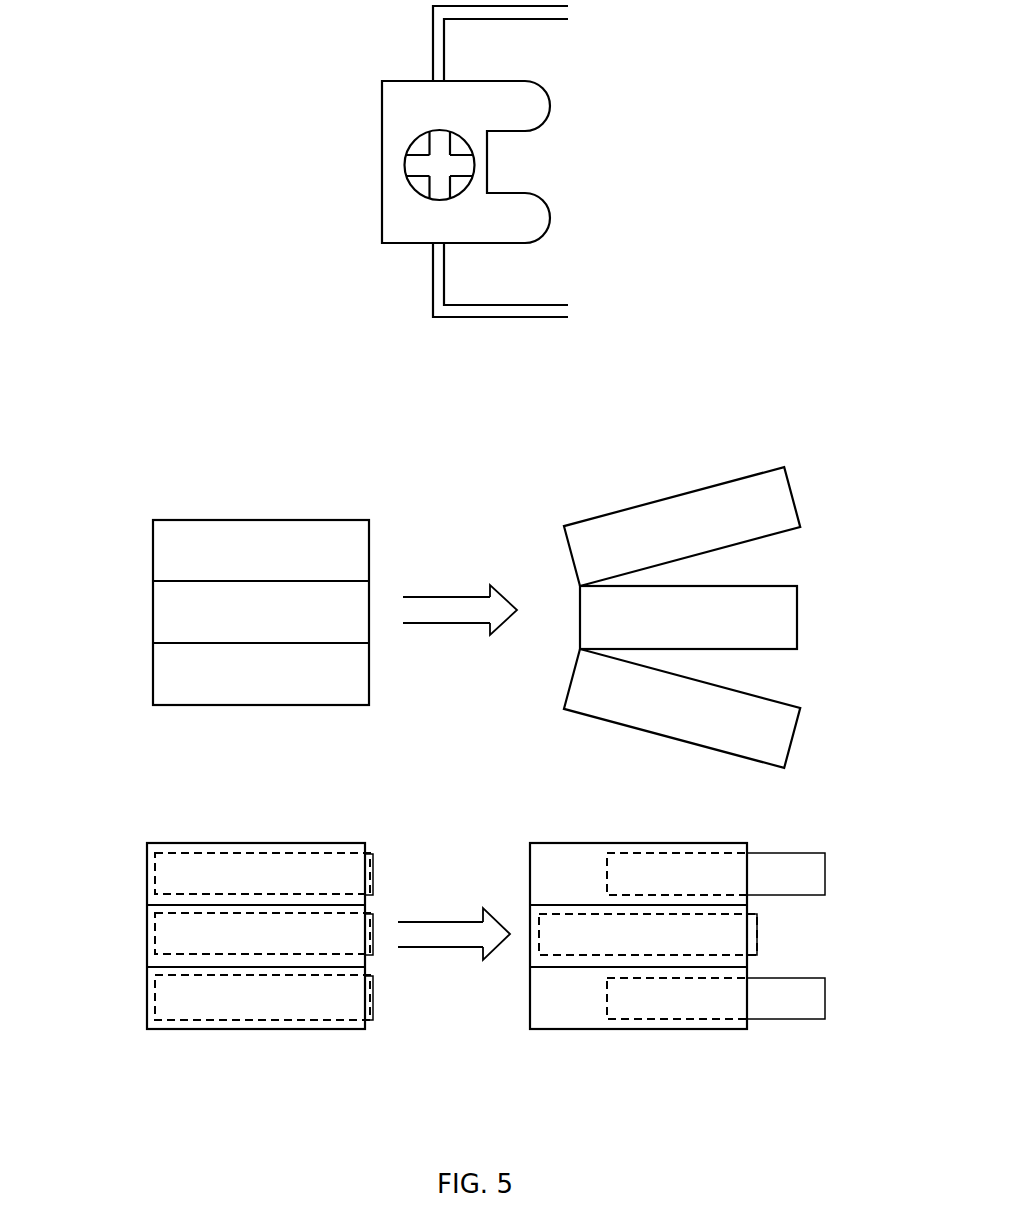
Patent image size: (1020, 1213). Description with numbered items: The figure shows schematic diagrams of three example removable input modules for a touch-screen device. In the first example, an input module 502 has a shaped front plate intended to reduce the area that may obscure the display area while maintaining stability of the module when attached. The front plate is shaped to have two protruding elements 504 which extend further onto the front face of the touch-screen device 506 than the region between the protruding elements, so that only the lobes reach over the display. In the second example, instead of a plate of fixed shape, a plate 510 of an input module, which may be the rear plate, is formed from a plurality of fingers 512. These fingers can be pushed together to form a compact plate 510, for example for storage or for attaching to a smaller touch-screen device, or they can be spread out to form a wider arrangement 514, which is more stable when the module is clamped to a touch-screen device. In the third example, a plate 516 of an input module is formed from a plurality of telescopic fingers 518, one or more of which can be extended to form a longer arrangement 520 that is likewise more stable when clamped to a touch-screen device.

The input module 502 is at (363, 101).
The protruding elements 504 is at (559, 113).
The touch-screen device 506 is at (499, 328).
The plate 510 is at (212, 612).
The fingers 512 is at (261, 612).
The wider arrangement 514 is at (820, 466).
The plate 516 is at (116, 854).
The telescopic fingers 518 is at (490, 936).
The longer arrangement 520 is at (840, 816).